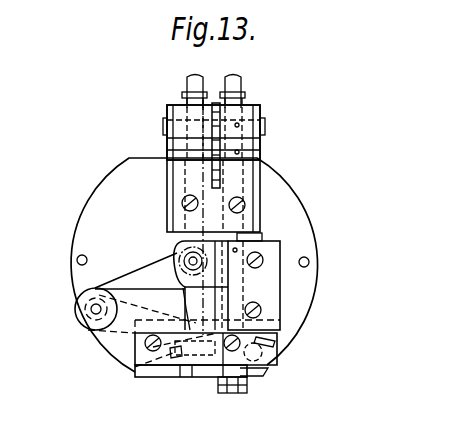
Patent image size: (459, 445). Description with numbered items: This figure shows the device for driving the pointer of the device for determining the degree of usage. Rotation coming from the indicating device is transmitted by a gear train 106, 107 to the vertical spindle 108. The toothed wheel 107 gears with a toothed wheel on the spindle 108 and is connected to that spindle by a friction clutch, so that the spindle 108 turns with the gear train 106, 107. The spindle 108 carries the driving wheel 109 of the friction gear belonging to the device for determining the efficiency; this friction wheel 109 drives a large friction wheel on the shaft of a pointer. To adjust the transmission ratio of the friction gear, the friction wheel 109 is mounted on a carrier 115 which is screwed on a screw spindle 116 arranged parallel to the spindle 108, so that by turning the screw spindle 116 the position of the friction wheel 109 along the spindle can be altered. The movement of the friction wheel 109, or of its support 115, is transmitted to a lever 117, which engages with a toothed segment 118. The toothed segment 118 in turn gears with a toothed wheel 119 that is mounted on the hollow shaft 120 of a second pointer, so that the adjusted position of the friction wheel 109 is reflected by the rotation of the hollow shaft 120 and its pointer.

The gear train 106 is at (217, 177).
The toothed wheel 107 is at (214, 114).
The vertical spindle 108 is at (190, 80).
The driving wheel 109 is at (133, 367).
The carrier 115 is at (178, 366).
The screw spindle 116 is at (238, 236).
The lever 117 is at (264, 372).
The toothed segment 118 is at (130, 273).
The toothed wheel 119 is at (181, 257).
The hollow shaft 120 is at (205, 262).